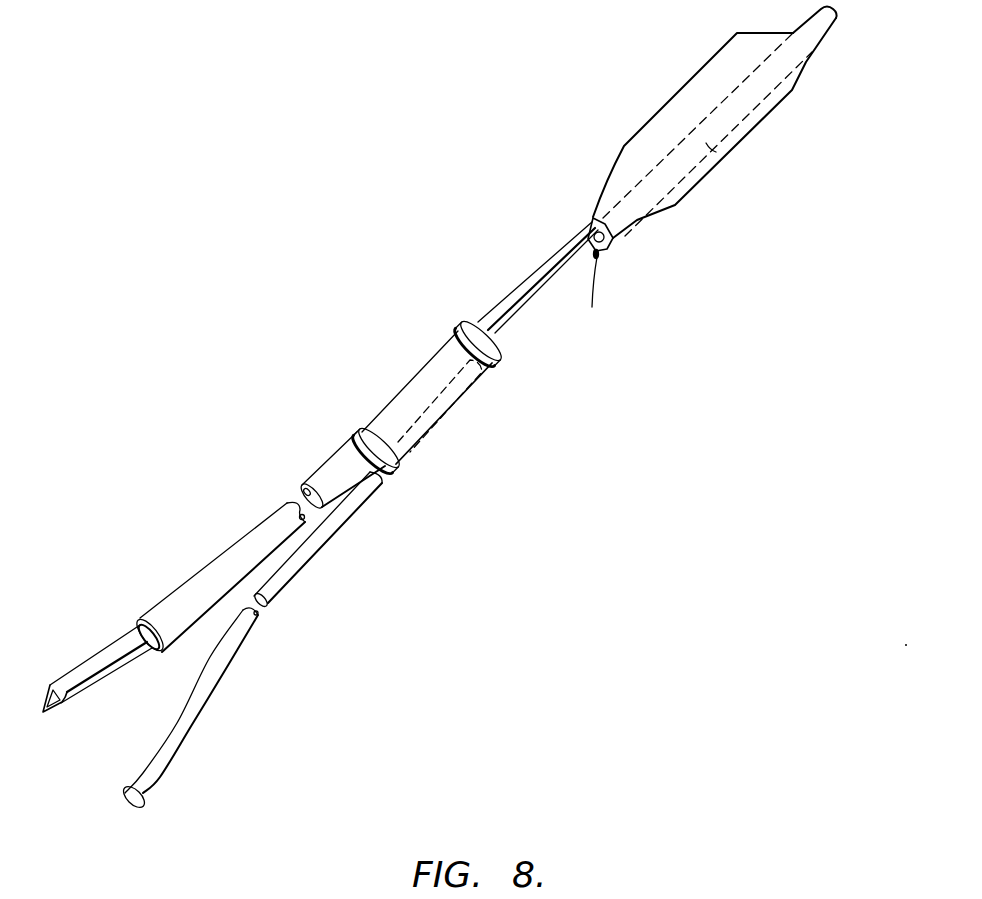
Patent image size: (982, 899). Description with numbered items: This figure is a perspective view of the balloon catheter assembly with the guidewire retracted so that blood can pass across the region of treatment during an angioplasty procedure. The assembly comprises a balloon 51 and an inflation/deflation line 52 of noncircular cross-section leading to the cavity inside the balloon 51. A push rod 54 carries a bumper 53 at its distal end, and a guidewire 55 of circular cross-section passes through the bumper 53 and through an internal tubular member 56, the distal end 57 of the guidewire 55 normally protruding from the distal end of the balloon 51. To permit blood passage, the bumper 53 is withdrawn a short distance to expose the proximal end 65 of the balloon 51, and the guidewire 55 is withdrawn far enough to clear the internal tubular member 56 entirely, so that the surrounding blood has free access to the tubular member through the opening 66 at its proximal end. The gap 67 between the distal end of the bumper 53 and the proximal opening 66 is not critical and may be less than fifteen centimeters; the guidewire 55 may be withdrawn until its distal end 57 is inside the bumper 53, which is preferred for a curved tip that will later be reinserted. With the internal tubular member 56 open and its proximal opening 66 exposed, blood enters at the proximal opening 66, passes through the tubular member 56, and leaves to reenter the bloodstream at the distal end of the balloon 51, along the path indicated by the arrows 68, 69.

The balloon 51 is at (698, 74).
The inflation/deflation line 52 is at (537, 260).
The bumper 53 is at (546, 394).
The push rod 54 is at (250, 530).
The guidewire 55 is at (207, 695).
The internal tubular member 56 is at (727, 157).
The distal end of the guidewire 57 is at (470, 385).
The proximal end of the balloon 65 is at (592, 220).
The opening at the proximal end of the tubular member 66 is at (612, 240).
The gap 67 is at (687, 321).
The arrow 68 is at (595, 286).
The arrow 69 is at (838, 2).